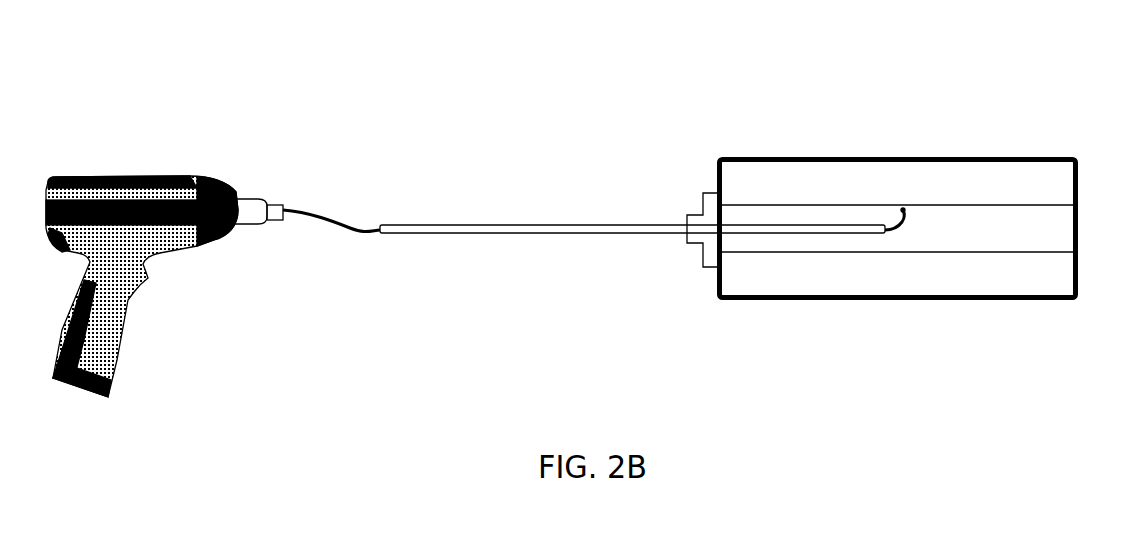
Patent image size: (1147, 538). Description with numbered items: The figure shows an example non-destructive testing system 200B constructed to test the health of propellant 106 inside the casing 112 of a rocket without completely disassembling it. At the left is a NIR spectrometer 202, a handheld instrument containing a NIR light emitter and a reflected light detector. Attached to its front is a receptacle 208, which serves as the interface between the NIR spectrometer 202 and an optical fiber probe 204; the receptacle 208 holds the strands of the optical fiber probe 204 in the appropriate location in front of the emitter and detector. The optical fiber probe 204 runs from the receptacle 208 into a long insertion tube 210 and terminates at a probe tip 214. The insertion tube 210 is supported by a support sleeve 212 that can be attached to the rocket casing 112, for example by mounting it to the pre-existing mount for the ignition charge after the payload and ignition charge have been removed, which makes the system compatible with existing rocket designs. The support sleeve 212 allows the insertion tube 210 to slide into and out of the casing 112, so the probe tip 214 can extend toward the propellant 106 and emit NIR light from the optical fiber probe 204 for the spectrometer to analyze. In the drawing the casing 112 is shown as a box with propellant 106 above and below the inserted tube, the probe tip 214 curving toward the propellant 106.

The non-destructive testing system 200B is at (1082, 44).
The NIR spectrometer 202 is at (93, 177).
The optical fiber probe 204 is at (366, 214).
The receptacle 208 is at (277, 204).
The insertion tube 210 is at (567, 235).
The support sleeve 212 is at (700, 214).
The casing 112 is at (827, 132).
The propellant 106 is at (897, 229).
The probe tip 214 is at (930, 227).